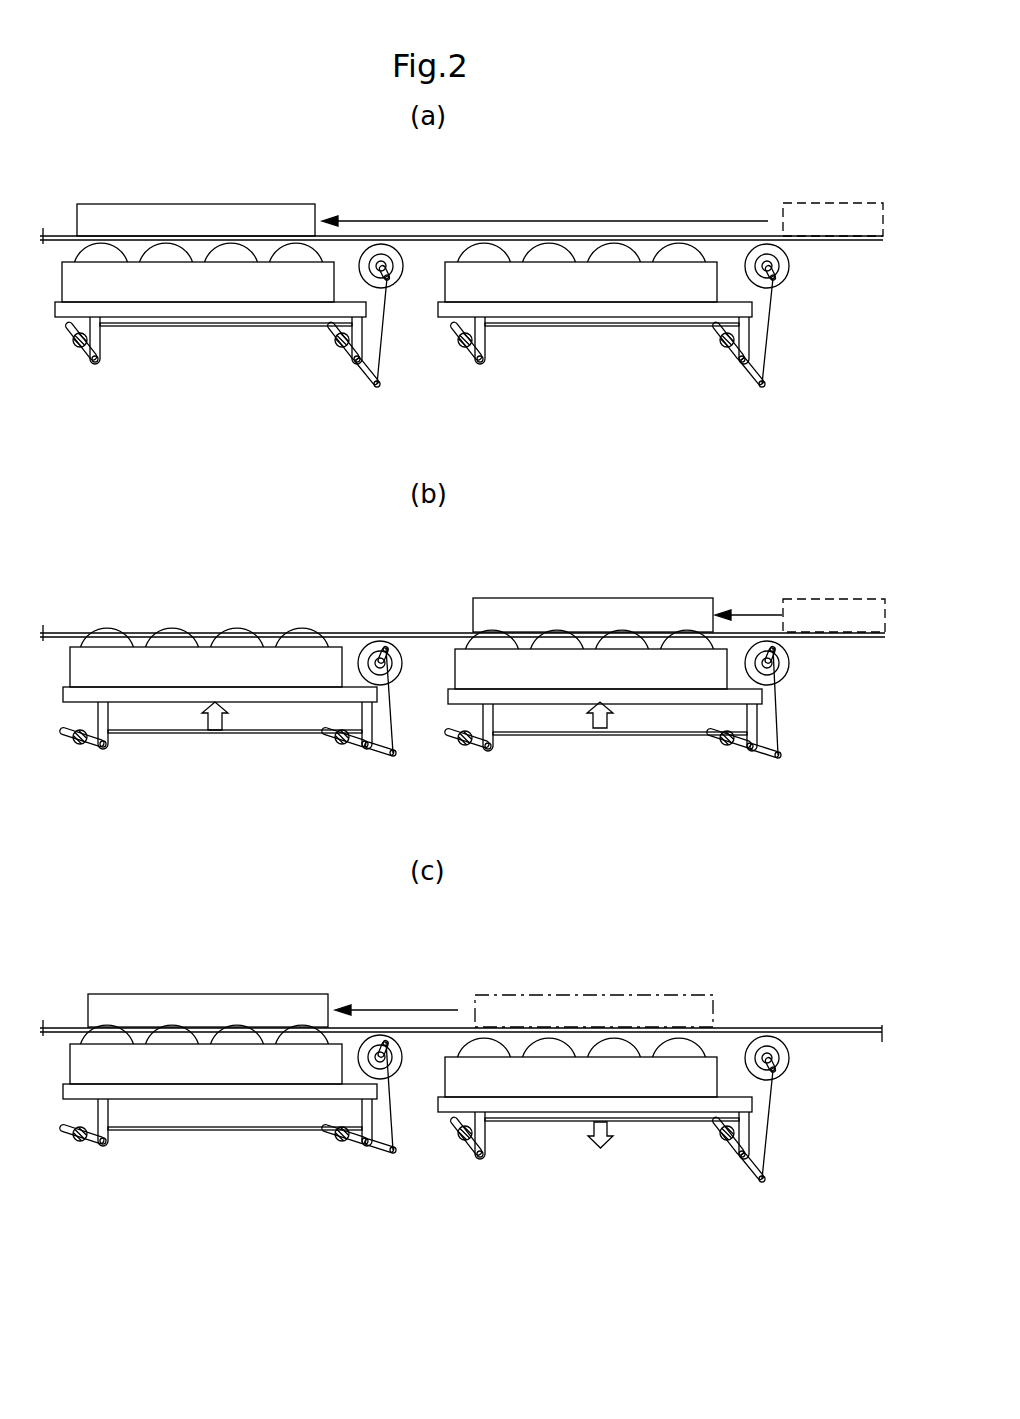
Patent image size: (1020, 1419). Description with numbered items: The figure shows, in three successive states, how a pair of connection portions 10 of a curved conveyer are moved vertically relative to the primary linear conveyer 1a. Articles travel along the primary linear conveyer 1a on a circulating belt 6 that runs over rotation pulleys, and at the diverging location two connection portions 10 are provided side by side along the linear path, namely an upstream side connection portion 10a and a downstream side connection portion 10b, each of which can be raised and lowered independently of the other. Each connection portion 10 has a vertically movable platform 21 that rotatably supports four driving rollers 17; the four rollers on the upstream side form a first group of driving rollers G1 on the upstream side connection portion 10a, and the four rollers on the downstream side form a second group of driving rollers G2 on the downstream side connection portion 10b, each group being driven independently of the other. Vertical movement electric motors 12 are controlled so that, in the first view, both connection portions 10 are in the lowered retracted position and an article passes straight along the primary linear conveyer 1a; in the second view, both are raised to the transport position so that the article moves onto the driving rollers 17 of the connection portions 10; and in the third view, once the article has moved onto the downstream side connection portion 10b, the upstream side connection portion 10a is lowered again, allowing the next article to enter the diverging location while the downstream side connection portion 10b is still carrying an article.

The circulating belt 6 is at (462, 588).
The primary linear conveyer 1a is at (57, 235).
The driving rollers 17 is at (480, 611).
The first group of driving rollers G1 is at (672, 630).
The second group of driving rollers G2 is at (202, 624).
The vertical movement electric motor 12 is at (400, 272).
The vertically movable platform 21 is at (267, 312).
The connection portion 10 is at (419, 745).
The upstream side connection portion 10a is at (601, 346).
The downstream side connection portion 10b is at (224, 341).